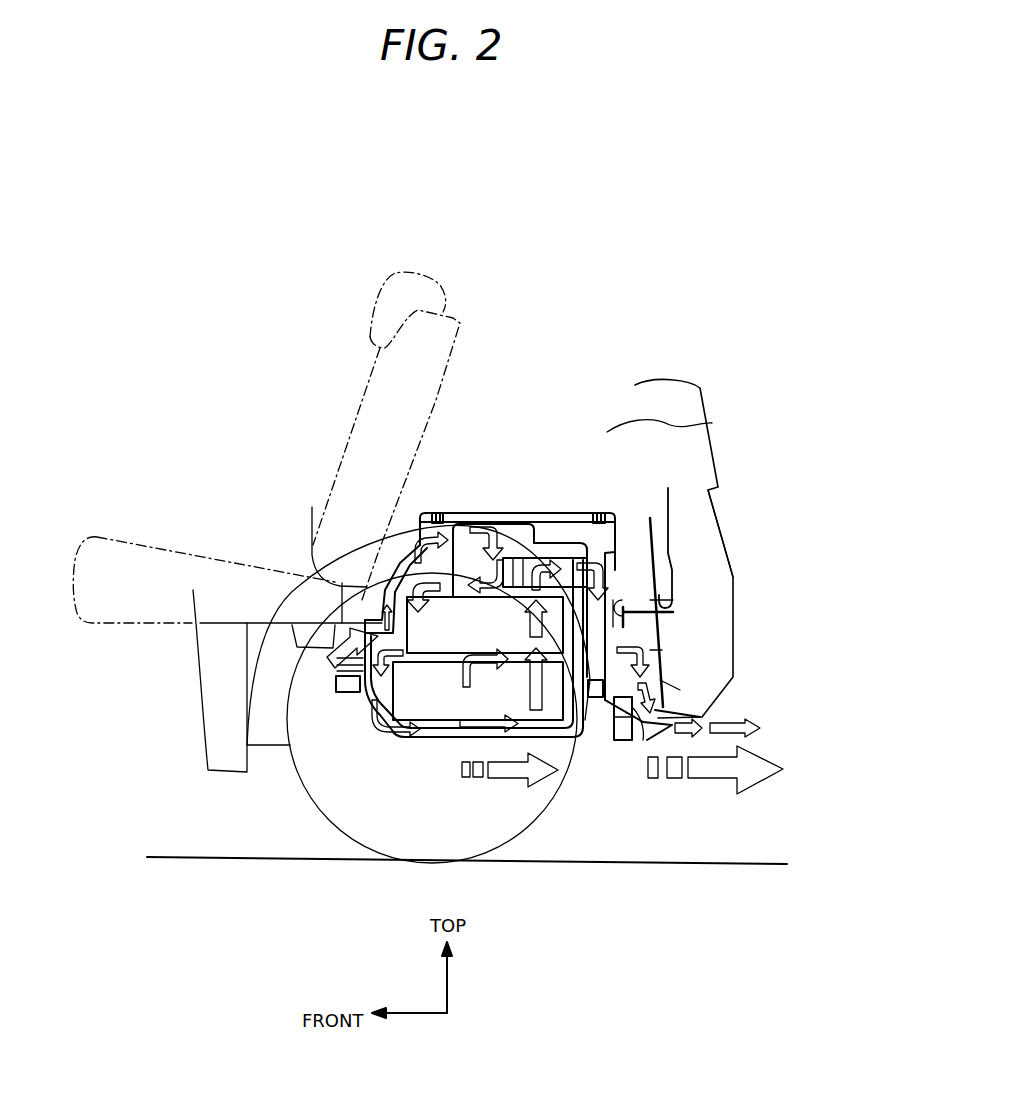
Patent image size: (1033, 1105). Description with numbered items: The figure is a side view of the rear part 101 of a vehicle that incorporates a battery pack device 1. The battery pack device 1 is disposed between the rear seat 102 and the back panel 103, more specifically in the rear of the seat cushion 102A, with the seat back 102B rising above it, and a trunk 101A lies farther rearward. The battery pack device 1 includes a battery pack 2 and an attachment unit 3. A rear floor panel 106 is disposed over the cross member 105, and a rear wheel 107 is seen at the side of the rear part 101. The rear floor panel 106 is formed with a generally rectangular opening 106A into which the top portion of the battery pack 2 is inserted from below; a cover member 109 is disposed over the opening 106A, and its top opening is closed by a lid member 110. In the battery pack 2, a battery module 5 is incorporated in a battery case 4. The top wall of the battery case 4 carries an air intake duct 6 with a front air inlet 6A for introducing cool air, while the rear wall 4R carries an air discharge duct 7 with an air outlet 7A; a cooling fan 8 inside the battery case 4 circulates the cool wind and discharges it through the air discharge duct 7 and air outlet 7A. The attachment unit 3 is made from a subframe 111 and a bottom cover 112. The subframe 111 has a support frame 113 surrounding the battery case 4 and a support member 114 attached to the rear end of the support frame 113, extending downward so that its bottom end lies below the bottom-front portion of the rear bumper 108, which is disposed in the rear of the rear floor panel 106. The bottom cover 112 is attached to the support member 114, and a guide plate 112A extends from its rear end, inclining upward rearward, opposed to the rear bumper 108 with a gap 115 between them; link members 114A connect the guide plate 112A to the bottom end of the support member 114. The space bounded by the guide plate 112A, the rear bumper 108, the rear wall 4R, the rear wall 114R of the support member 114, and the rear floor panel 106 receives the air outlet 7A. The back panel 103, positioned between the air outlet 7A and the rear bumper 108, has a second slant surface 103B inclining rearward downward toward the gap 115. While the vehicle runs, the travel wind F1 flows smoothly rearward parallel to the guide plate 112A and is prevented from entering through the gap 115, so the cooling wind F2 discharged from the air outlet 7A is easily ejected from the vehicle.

The battery pack device 1 is at (683, 522).
The battery pack 2 is at (548, 537).
The attachment unit 3 is at (318, 691).
The battery case 4 is at (567, 533).
The rear wall of the battery case 4R is at (667, 637).
The battery module 5 is at (477, 697).
The air intake duct 6 is at (500, 530).
The air inlet 6A is at (460, 535).
The air discharge duct 7 is at (662, 548).
The air outlet 7A is at (660, 653).
The cooling fan 8 is at (517, 560).
The rear part 101 is at (606, 300).
The trunk 101A is at (712, 423).
The rear seat 102 is at (266, 447).
The seat cushion 102A is at (215, 555).
The seat back 102B is at (360, 397).
The back panel 103 is at (657, 623).
The second slant surface 103B is at (670, 680).
The cross member 105 is at (290, 637).
The rear floor panel 106 is at (345, 588).
The opening 106A is at (620, 595).
The rear wheel 107 is at (297, 773).
The rear bumper 108 is at (620, 583).
The cover member 109 is at (420, 527).
The lid member 110 is at (543, 537).
The subframe 111 is at (328, 679).
The bottom cover 112 is at (510, 750).
The guide plate 112A is at (667, 727).
The support frame 113 is at (350, 693).
The support member 114 is at (617, 745).
The link member 114A is at (622, 747).
The rear wall of the support member 114R is at (640, 717).
The gap 115 is at (660, 720).
The travel wind F1 is at (763, 783).
The cooling wind F2 is at (660, 667).